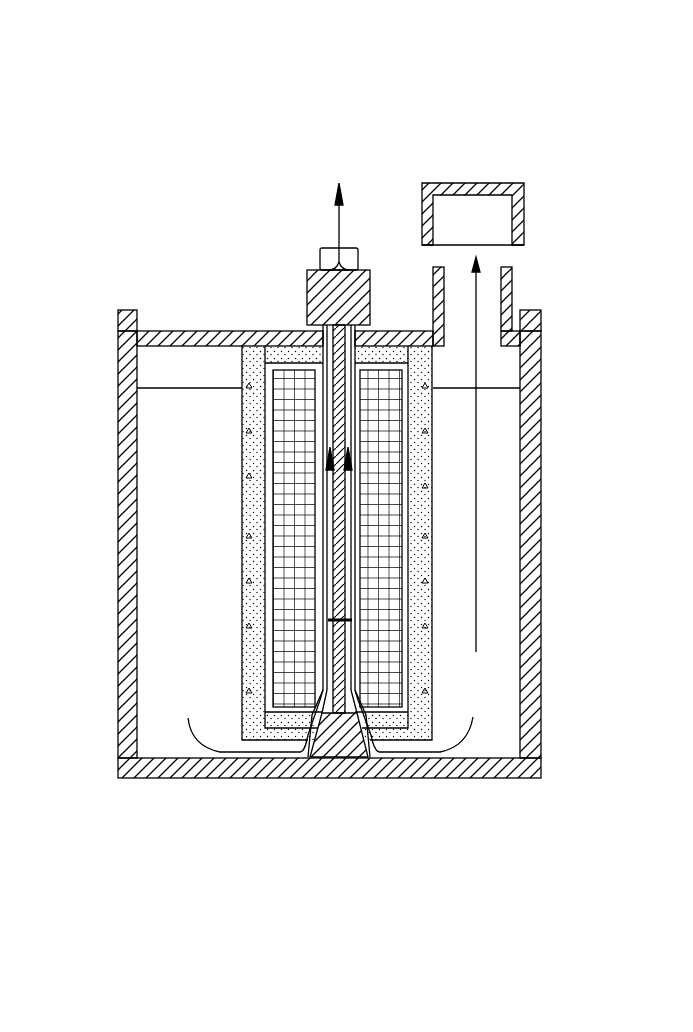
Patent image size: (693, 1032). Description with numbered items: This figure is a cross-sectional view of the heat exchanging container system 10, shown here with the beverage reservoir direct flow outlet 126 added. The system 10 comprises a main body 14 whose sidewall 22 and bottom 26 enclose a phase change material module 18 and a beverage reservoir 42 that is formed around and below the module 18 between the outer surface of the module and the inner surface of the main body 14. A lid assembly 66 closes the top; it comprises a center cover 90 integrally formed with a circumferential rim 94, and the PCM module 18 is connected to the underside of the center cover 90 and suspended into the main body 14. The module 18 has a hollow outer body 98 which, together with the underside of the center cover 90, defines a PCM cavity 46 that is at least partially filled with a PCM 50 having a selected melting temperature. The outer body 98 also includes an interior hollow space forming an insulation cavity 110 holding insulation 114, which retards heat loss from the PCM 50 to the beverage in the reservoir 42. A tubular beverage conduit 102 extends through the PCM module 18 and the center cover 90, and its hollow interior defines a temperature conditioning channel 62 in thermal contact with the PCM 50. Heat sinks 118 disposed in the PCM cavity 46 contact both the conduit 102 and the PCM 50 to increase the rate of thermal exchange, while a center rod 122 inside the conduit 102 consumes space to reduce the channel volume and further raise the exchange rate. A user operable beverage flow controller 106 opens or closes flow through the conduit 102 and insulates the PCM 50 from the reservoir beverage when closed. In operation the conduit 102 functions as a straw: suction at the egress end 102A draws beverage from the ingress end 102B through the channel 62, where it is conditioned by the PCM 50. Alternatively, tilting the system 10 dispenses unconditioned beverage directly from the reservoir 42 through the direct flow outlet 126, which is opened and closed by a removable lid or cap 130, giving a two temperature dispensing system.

The container system 10 is at (606, 214).
The main body 14 is at (549, 577).
The phase change material (PCM) module 18 is at (443, 541).
The sidewall 22 is at (118, 530).
The bottom 26 is at (240, 778).
The beverage reservoir 42 is at (207, 604).
The PCM cavity 46 is at (440, 697).
The PCM 50 is at (405, 353).
The temperature conditioning channel 62 is at (322, 548).
The lid assembly 66 is at (550, 351).
The center cover 90 is at (197, 331).
The circumferential rim 94 is at (118, 318).
The outer body 98 is at (433, 683).
The beverage conduit 102 is at (355, 360).
The egress end 102A is at (348, 248).
The ingress end 102B is at (360, 680).
The beverage flow controller 106 is at (307, 284).
The insulation cavity 110 is at (433, 494).
The insulation 114 is at (327, 593).
The heat sink 118 is at (297, 588).
The center rod 122 is at (433, 508).
The beverage reservoir direct flow outlet 126 is at (512, 282).
The direct flow outlet lid or cap 130 is at (478, 183).